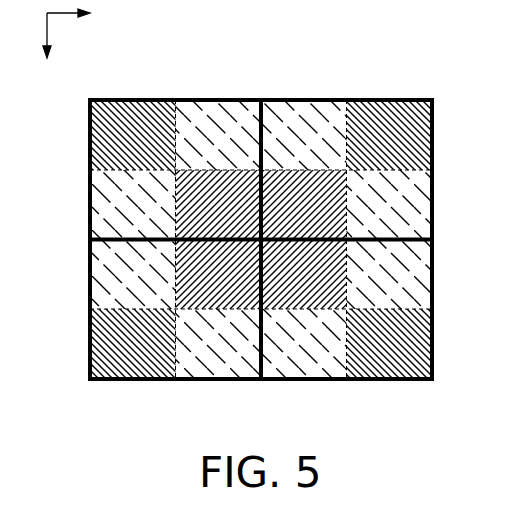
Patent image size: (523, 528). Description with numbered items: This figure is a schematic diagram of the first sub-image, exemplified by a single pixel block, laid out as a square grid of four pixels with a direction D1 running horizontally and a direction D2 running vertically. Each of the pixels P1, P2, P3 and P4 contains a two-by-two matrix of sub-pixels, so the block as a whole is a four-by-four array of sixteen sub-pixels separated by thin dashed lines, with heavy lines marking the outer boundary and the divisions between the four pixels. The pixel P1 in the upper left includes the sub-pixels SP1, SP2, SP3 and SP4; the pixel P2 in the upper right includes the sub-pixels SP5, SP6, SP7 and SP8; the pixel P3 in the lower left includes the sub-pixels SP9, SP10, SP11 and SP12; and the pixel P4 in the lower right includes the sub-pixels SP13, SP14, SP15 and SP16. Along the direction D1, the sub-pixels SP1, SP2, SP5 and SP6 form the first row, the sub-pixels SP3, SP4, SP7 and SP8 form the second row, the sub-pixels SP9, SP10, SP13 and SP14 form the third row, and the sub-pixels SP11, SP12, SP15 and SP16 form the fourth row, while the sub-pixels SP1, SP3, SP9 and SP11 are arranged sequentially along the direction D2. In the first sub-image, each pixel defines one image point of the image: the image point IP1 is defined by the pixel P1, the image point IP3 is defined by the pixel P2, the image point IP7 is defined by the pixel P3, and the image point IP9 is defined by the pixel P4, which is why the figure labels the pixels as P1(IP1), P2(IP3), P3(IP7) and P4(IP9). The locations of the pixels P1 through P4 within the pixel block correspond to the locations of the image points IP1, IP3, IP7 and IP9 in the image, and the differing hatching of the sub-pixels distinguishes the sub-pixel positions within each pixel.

The direction D1 is at (86, 14).
The direction D2 is at (45, 48).
The pixel P1 is at (182, 144).
The pixel P2 is at (349, 144).
The pixel P3 is at (175, 337).
The pixel P4 is at (350, 337).
The image point IP1 is at (175, 170).
The image point IP3 is at (346, 170).
The image point IP7 is at (175, 310).
The image point IP9 is at (346, 310).
The sub-pixel SP1 is at (133, 135).
The sub-pixel SP2 is at (219, 135).
The sub-pixel SP3 is at (133, 205).
The sub-pixel SP4 is at (219, 205).
The sub-pixel SP5 is at (304, 135).
The sub-pixel SP6 is at (390, 135).
The sub-pixel SP7 is at (304, 205).
The sub-pixel SP8 is at (390, 205).
The sub-pixel SP9 is at (133, 275).
The sub-pixel SP10 is at (219, 275).
The sub-pixel SP11 is at (133, 344).
The sub-pixel SP12 is at (219, 344).
The sub-pixel SP13 is at (304, 275).
The sub-pixel SP14 is at (390, 275).
The sub-pixel SP15 is at (304, 344).
The sub-pixel SP16 is at (390, 344).